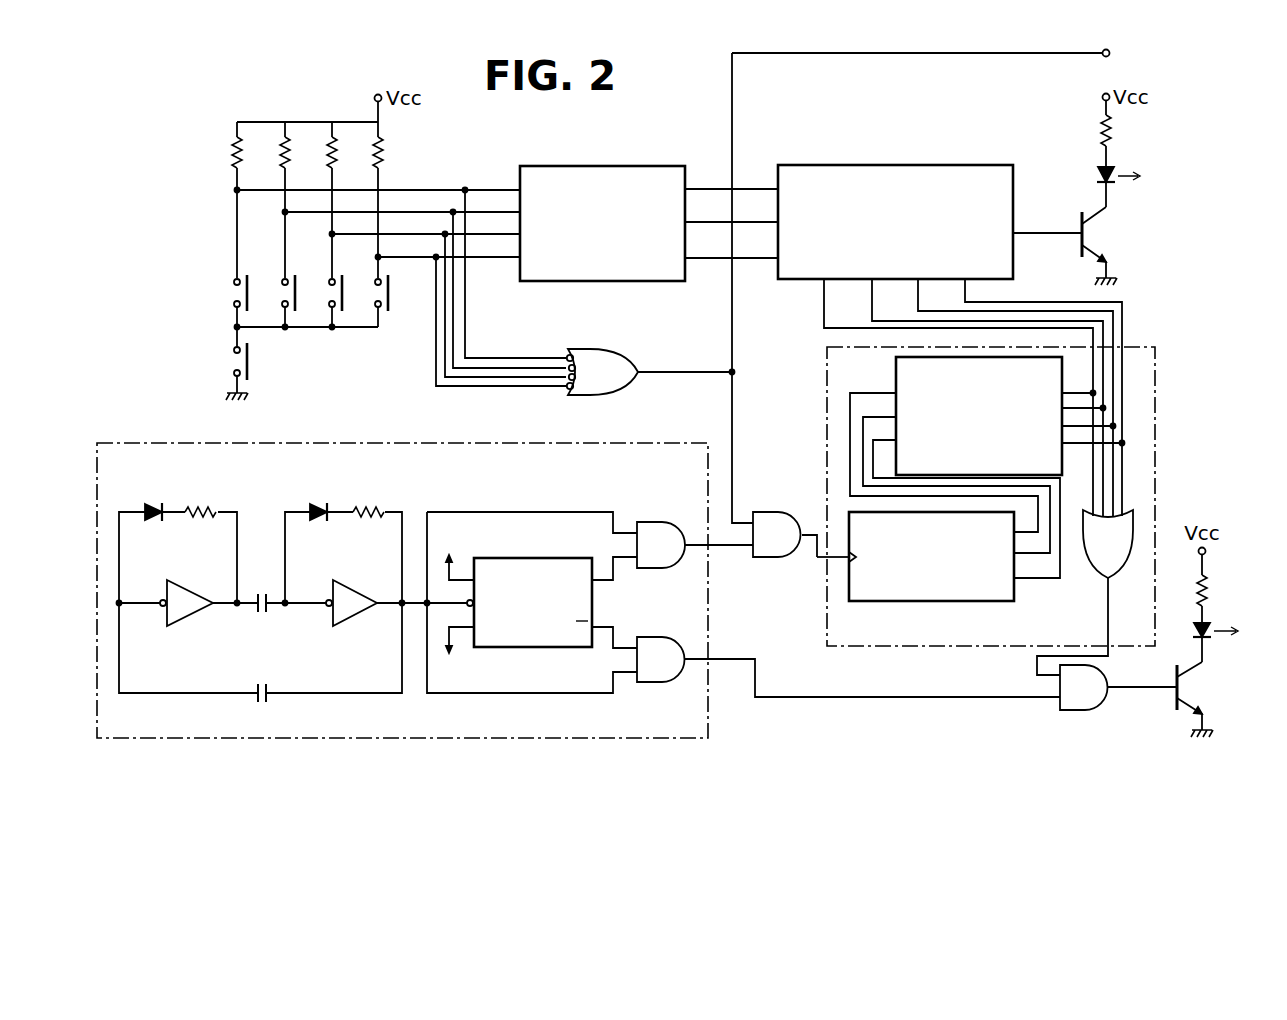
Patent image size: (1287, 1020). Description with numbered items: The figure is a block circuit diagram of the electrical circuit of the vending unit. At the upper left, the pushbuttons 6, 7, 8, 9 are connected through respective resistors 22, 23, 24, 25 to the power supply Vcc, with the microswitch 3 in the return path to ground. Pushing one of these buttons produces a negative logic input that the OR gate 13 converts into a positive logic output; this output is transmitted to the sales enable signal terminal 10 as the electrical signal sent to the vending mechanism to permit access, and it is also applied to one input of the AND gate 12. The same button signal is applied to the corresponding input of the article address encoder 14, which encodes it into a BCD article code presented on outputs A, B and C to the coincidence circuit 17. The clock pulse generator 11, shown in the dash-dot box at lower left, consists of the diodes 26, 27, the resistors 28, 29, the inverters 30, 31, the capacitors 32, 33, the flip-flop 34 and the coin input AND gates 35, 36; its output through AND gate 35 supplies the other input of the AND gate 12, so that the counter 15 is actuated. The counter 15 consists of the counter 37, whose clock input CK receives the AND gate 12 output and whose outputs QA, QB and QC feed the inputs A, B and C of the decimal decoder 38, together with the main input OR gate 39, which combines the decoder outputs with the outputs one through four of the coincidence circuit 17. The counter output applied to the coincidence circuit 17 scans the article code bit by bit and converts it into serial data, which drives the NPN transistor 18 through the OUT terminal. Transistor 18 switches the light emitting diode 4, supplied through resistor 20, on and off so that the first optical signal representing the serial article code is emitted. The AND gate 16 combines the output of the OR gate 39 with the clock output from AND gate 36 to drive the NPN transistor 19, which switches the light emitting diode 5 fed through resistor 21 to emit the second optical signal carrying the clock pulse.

The microswitch 3 is at (232, 365).
The light emitting diode 4 is at (1096, 176).
The light emitting diode 5 is at (1194, 634).
The pushbutton 6 is at (232, 295).
The pushbutton 7 is at (298, 289).
The pushbutton 8 is at (345, 291).
The pushbutton 9 is at (390, 293).
The sales enable signal terminal 10 is at (1111, 56).
The clock pulse generator 11 is at (392, 440).
The AND gate 12 is at (777, 512).
The OR gate 13 is at (597, 349).
The article address encoder 14 is at (603, 166).
The counter 15 is at (826, 432).
The AND gate 16 is at (1105, 700).
The coincidence circuit 17 is at (896, 165).
The NPN transistor 18 is at (1094, 228).
The NPN transistor 19 is at (1188, 680).
The resistor 20 is at (1112, 135).
The resistor 21 is at (1210, 588).
The resistor 22 is at (234, 150).
The resistor 23 is at (283, 148).
The resistor 24 is at (338, 150).
The resistor 25 is at (387, 150).
The diode 26 is at (154, 504).
The diode 27 is at (319, 504).
The resistor 28 is at (203, 508).
The resistor 29 is at (368, 508).
The inverter 30 is at (192, 581).
The inverter 31 is at (354, 581).
The capacitor 32 is at (262, 594).
The capacitor 33 is at (262, 684).
The flip-flop 34 is at (594, 603).
The coin input AND gate 35 is at (666, 522).
The coin input AND gate 36 is at (655, 682).
The counter 37 is at (1016, 585).
The decimal decoder 38 is at (896, 370).
The main input OR gate 39 is at (1120, 572).